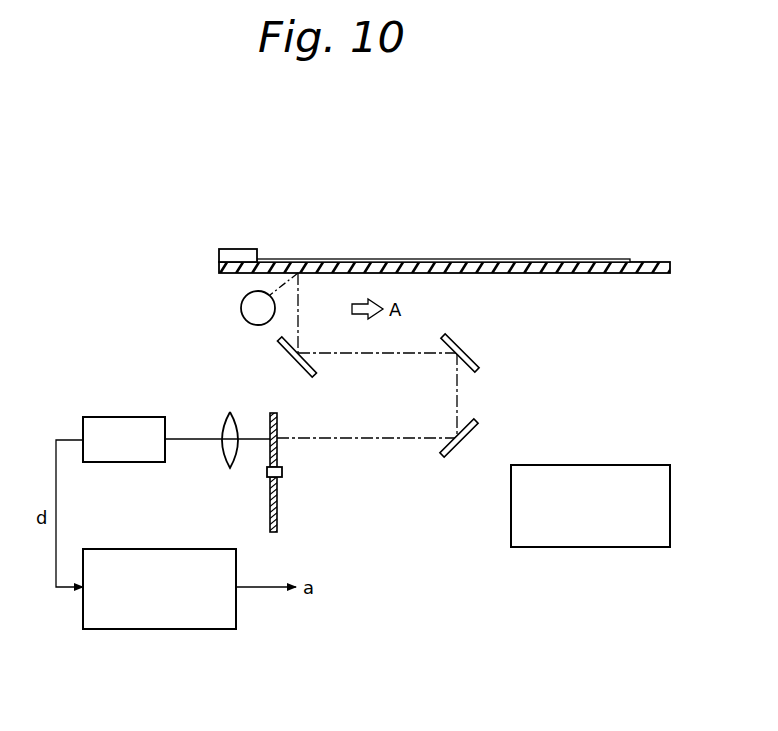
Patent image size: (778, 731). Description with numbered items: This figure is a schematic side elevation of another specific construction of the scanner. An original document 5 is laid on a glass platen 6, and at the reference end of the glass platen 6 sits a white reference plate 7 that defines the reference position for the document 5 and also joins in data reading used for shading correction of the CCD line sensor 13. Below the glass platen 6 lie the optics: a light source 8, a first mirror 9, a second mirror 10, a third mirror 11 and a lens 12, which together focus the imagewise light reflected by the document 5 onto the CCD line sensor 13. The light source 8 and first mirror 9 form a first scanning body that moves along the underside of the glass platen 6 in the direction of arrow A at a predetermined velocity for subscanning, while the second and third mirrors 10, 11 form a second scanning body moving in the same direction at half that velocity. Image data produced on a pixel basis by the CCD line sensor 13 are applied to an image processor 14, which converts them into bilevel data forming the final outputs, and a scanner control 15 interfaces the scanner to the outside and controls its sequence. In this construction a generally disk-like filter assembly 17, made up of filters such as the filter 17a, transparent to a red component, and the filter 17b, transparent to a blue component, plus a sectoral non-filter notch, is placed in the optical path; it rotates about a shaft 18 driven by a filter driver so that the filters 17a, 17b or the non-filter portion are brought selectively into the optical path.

The original document 5 is at (465, 262).
The glass platen 6 is at (542, 259).
The white reference plate 7 is at (235, 249).
The light source 8 is at (246, 306).
The first mirror 9 is at (316, 366).
The second mirror 10 is at (468, 342).
The third mirror 11 is at (477, 426).
The lens 12 is at (223, 422).
The CCD line sensor 13 is at (117, 417).
The image processor 14 is at (141, 549).
The scanner control 15 is at (595, 465).
The filter assembly 17 is at (305, 485).
The filter 17a is at (277, 447).
The filter 17b is at (280, 500).
The shaft 18 is at (267, 475).